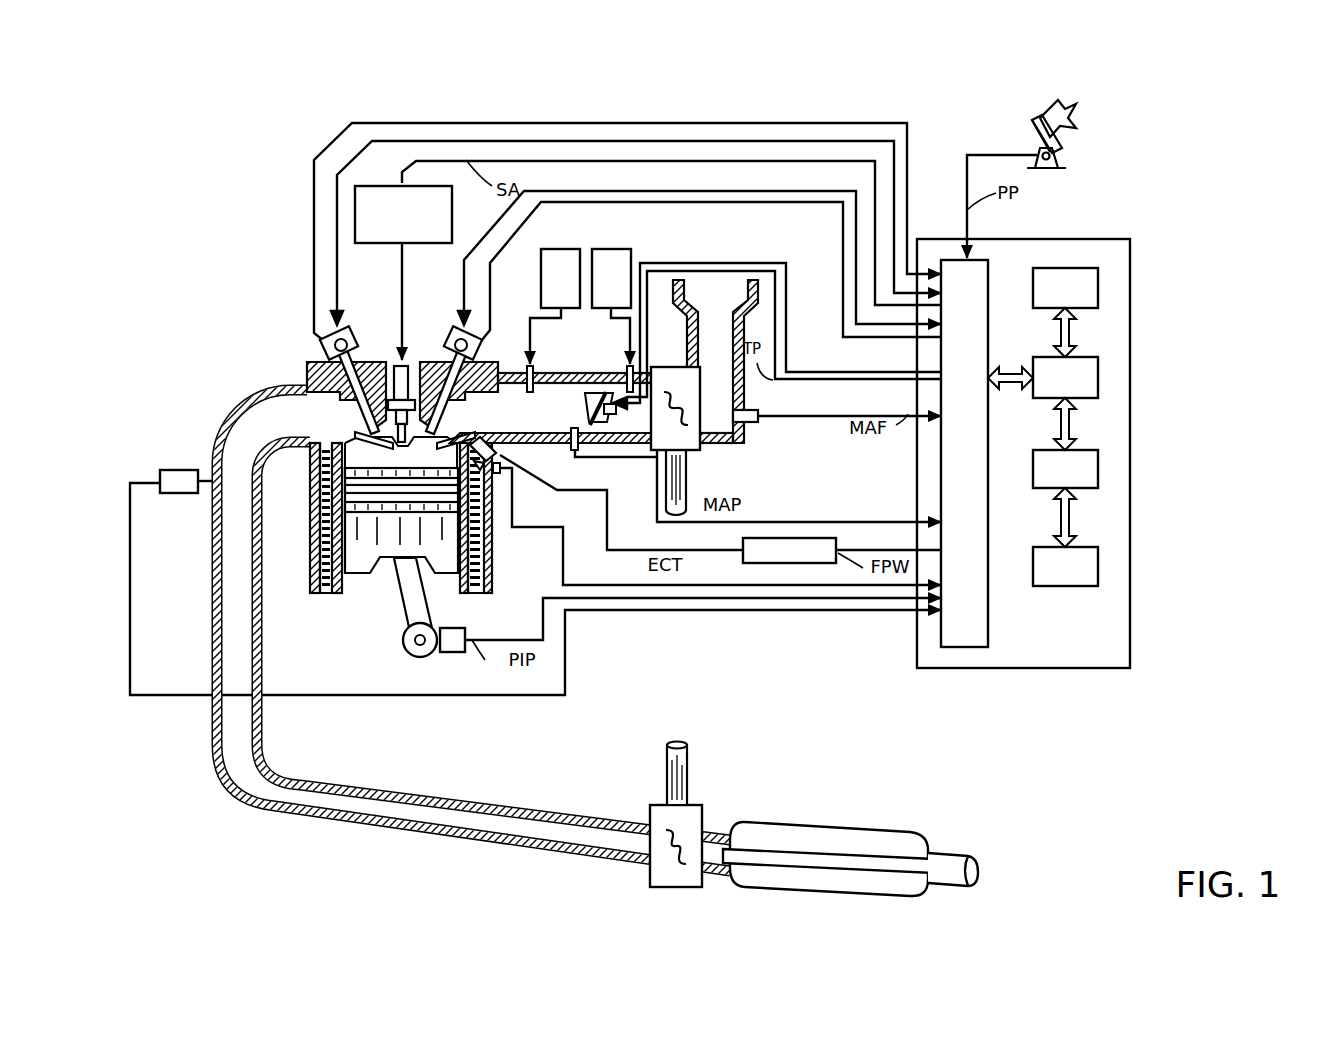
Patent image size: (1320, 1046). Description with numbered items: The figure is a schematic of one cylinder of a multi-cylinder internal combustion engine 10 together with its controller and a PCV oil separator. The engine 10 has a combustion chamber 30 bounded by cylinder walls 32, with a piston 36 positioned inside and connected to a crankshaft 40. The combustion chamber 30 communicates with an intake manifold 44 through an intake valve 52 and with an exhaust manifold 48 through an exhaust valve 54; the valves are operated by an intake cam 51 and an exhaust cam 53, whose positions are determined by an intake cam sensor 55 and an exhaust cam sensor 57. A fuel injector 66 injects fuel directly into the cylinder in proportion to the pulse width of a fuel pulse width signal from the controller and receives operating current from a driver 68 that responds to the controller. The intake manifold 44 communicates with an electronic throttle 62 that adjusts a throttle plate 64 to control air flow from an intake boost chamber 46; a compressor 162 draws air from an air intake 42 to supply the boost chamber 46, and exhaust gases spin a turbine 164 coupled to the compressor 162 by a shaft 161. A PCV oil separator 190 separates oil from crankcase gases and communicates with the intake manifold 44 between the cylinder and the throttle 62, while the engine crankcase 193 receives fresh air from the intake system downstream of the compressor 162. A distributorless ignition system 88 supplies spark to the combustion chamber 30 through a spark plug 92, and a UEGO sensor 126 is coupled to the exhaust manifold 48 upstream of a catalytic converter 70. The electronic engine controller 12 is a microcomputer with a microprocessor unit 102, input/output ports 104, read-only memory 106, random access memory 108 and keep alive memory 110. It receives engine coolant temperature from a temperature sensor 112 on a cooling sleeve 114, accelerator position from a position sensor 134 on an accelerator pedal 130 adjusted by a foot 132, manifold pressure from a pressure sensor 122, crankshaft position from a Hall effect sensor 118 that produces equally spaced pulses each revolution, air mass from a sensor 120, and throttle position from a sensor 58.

The internal combustion engine 10 is at (247, 316).
The electronic engine controller 12 is at (1130, 243).
The combustion chamber 30 is at (340, 525).
The cylinder walls 32 is at (345, 593).
The piston 36 is at (385, 548).
The crankshaft 40 is at (412, 657).
The air intake 42 is at (715, 361).
The intake manifold 44 is at (591, 408).
The intake boost chamber 46 is at (630, 419).
The exhaust manifold 48 is at (473, 630).
The intake cam 51 is at (448, 318).
The intake valve 52 is at (440, 428).
The exhaust cam 53 is at (350, 302).
The exhaust valve 54 is at (365, 430).
The intake cam sensor 55 is at (477, 354).
The exhaust cam sensor 57 is at (328, 347).
The throttle position sensor 58 is at (610, 393).
The electronic throttle 62 is at (600, 415).
The throttle plate 64 is at (598, 395).
The fuel injector 66 is at (492, 462).
The driver 68 is at (757, 563).
The catalytic converter 70 is at (738, 890).
The distributorless ignition system 88 is at (371, 186).
The spark plug 92 is at (407, 375).
The microprocessor unit 102 is at (1098, 385).
The input/output ports 104 is at (990, 268).
The read-only memory 106 is at (1098, 288).
The random access memory 108 is at (1098, 475).
The keep alive memory 110 is at (1098, 573).
The temperature sensor 112 is at (498, 475).
The cooling sleeve 114 is at (484, 565).
The Hall effect sensor 118 is at (450, 653).
The air mass sensor 120 is at (758, 414).
The pressure sensor 122 is at (575, 428).
The Universal Exhaust Gas Oxygen (UEGO) sensor 126 is at (160, 477).
The accelerator pedal 130 is at (1030, 133).
The foot 132 is at (1066, 120).
The position sensor 134 is at (1052, 160).
The shaft 161 is at (688, 800).
The compressor 162 is at (683, 365).
The turbine 164 is at (660, 805).
The PCV oil separator 190 is at (560, 278).
The engine crankcase 193 is at (611, 278).